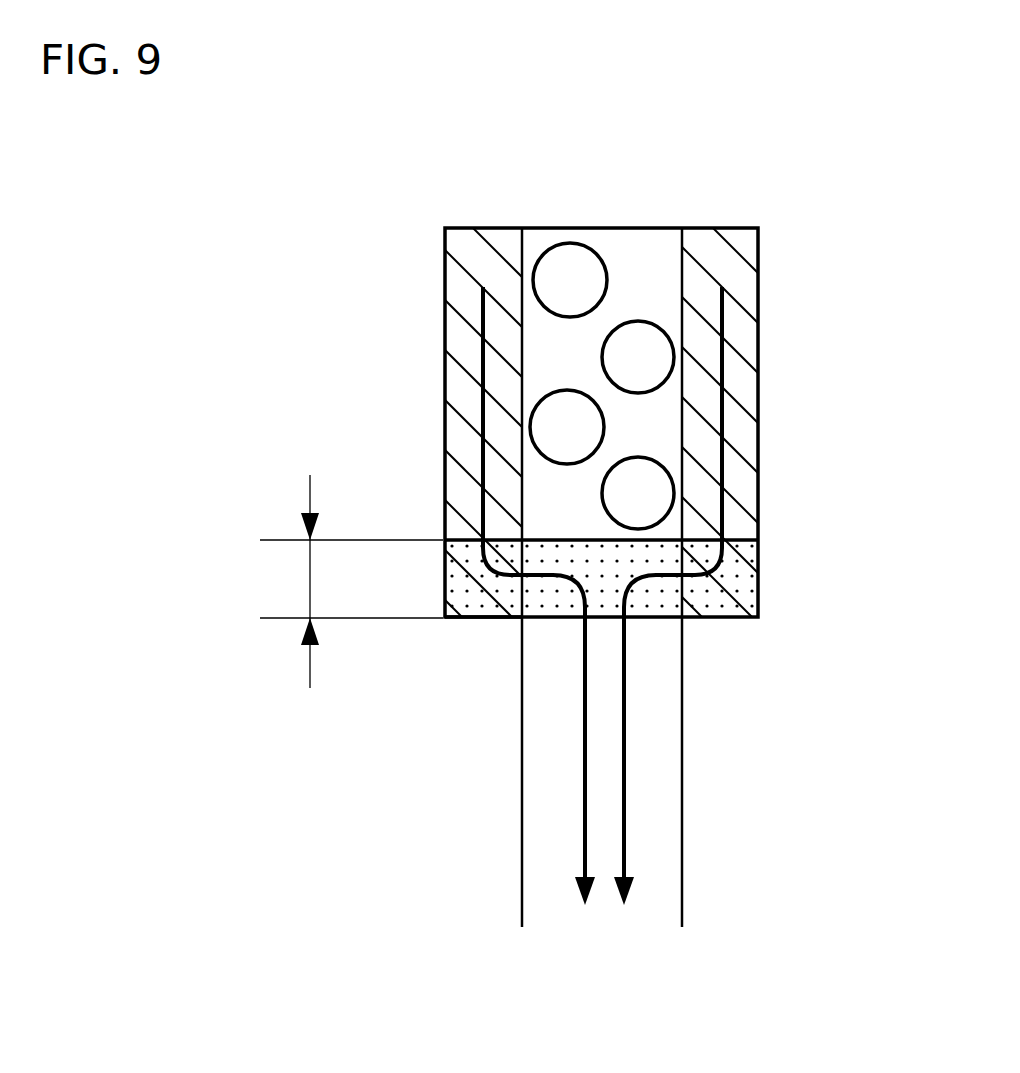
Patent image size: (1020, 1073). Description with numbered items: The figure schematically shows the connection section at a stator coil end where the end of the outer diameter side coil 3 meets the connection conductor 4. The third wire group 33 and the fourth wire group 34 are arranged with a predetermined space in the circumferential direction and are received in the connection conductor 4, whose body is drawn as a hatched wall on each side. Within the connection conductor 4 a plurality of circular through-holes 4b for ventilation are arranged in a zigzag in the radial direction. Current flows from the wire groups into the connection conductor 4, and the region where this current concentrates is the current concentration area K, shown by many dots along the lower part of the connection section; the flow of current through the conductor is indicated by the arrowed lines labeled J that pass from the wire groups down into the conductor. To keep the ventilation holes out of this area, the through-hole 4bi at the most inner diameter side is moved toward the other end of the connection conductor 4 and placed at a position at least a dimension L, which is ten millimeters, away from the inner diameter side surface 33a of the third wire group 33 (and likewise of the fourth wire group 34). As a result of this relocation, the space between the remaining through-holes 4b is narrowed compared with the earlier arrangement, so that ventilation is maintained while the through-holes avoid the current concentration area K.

The outer diameter side coil 3 is at (420, 343).
The third wire group 33 is at (455, 272).
The fourth wire group 34 is at (745, 288).
The through-holes 4b is at (580, 260).
The through-hole at the most inner diameter side 4bi is at (652, 498).
The current concentration area K is at (662, 597).
The connection conductor 4 is at (663, 690).
The flow direction J is at (625, 817).
The inner diameter side surface 33a is at (490, 622).
The dimension L is at (351, 581).